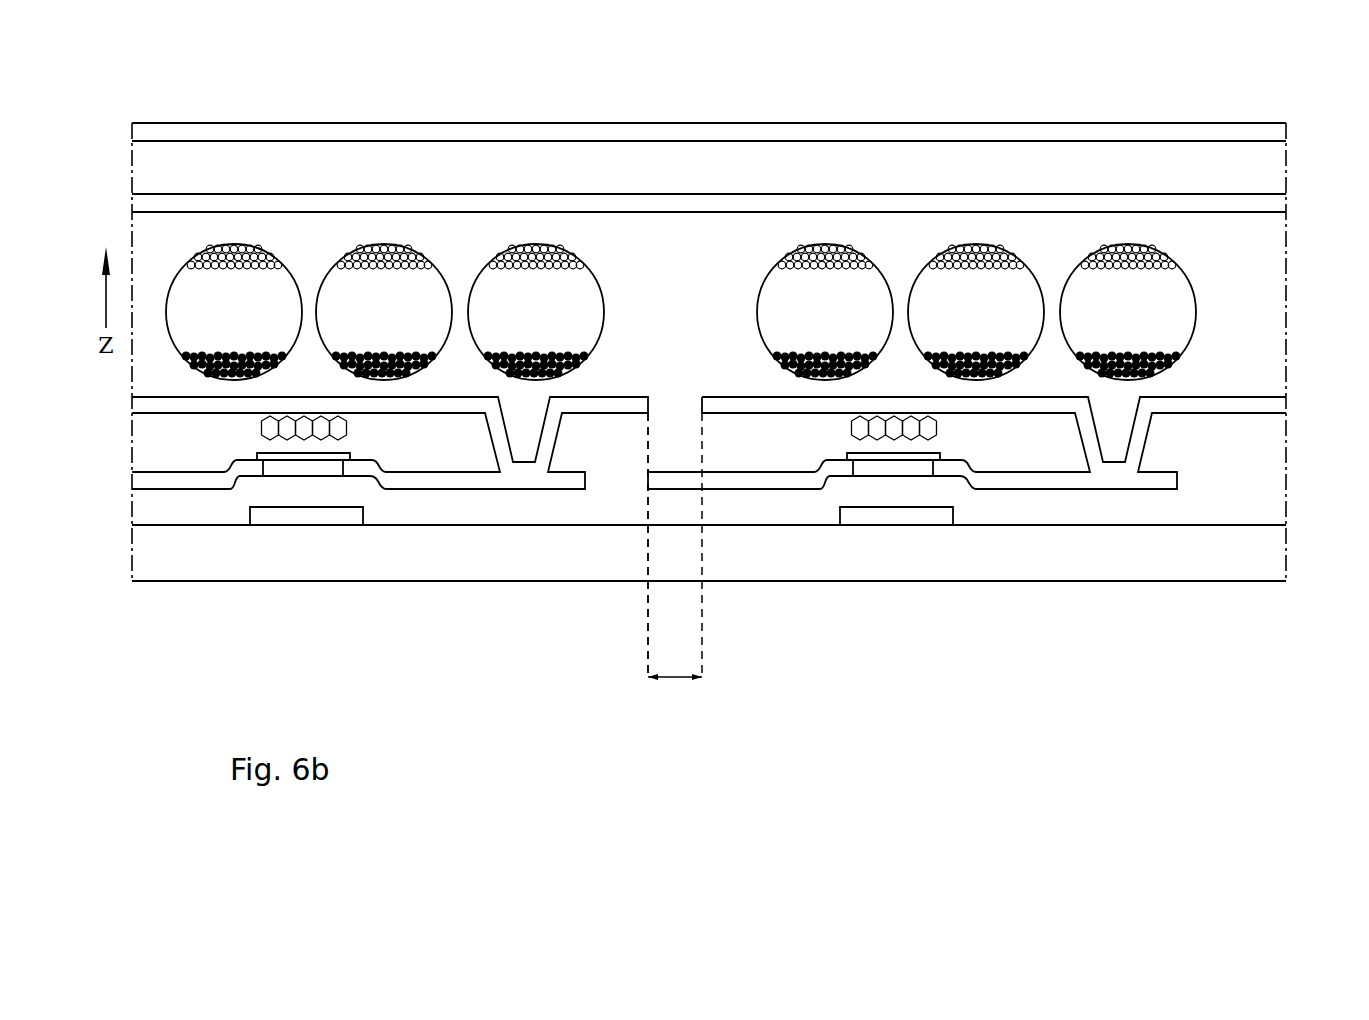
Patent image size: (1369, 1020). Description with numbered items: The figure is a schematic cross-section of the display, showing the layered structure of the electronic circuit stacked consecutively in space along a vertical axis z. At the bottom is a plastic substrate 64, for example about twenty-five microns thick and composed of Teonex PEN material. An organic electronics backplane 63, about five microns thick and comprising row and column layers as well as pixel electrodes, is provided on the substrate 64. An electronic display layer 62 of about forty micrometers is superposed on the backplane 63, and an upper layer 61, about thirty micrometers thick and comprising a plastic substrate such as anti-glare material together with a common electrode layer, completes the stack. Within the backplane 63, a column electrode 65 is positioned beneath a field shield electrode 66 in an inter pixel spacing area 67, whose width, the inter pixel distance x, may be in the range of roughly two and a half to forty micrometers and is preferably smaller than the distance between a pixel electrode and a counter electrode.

The upper layer 61 is at (1297, 124).
The electronic display layer 62 is at (1297, 213).
The organic electronics backplane 63 is at (1297, 398).
The plastic substrate 64 is at (1297, 526).
The column electrode 65 is at (677, 482).
The field shield electrode 66 is at (675, 455).
The inter pixel spacing area 67 is at (648, 637).